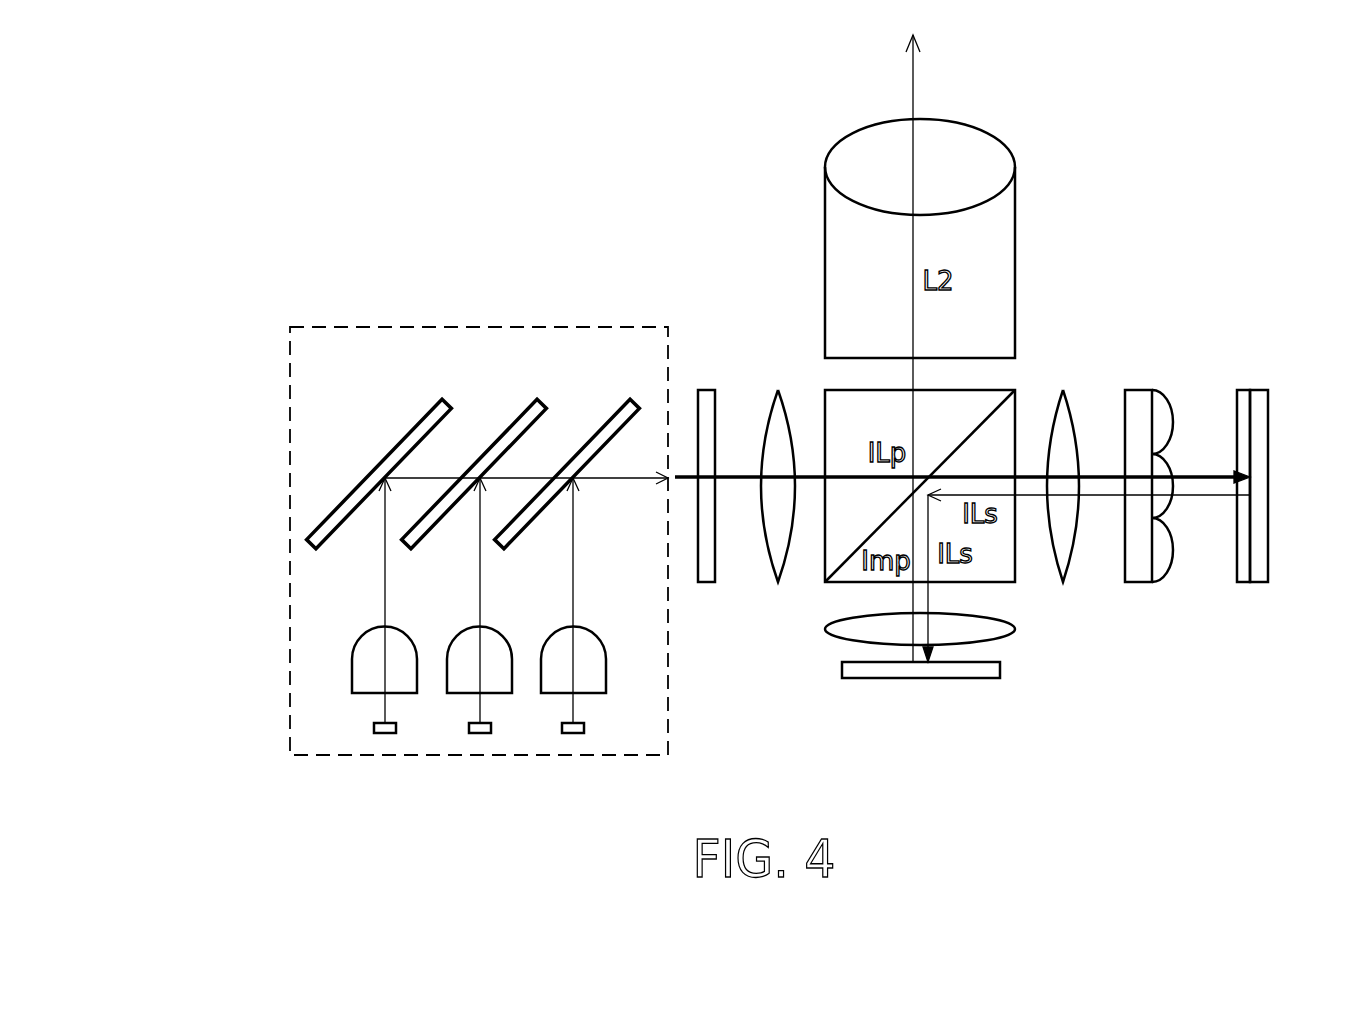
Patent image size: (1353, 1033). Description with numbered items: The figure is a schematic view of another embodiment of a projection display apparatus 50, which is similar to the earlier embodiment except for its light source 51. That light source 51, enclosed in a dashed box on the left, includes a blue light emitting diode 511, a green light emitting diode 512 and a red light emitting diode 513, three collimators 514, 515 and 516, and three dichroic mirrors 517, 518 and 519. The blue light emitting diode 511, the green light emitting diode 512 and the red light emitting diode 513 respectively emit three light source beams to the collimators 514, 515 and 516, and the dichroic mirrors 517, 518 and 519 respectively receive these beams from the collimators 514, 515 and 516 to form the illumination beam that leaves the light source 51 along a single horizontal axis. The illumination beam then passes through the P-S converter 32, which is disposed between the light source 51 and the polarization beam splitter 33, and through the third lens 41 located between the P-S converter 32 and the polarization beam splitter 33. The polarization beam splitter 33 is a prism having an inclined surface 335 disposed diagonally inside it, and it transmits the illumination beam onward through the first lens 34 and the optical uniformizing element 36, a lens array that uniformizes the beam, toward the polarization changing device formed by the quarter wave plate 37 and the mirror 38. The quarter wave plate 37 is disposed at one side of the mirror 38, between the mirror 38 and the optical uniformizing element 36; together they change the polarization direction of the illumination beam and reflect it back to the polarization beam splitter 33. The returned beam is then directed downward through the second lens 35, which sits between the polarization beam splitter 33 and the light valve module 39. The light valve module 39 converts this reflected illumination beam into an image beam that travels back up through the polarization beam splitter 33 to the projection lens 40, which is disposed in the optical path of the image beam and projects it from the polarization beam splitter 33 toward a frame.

The projection display apparatus 50 is at (323, 69).
The light source 51 is at (290, 541).
The blue light emitting diode 511 is at (385, 735).
The green light emitting diode 512 is at (480, 735).
The red light emitting diode 513 is at (573, 735).
The collimator 514 is at (410, 636).
The collimator 515 is at (505, 636).
The collimator 516 is at (598, 636).
The dichroic mirror 517 is at (387, 452).
The dichroic mirror 518 is at (482, 452).
The dichroic mirror 519 is at (575, 452).
The P-S converter 32 is at (707, 583).
The third lens 41 is at (780, 583).
The polarization beam splitter 33 is at (1018, 572).
The inclined surface 335 is at (1012, 390).
The projection lens 40 is at (968, 118).
The first lens 34 is at (1063, 583).
The second lens 35 is at (1011, 640).
The optical uniformizing element 36 is at (1137, 583).
The quarter wave plate 37 is at (1243, 583).
The mirror 38 is at (1258, 583).
The light valve module 39 is at (918, 680).